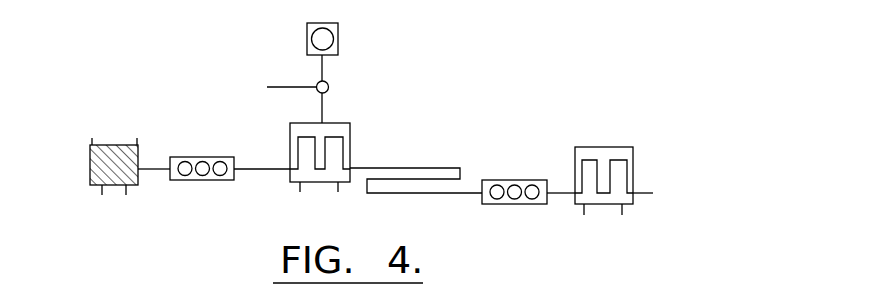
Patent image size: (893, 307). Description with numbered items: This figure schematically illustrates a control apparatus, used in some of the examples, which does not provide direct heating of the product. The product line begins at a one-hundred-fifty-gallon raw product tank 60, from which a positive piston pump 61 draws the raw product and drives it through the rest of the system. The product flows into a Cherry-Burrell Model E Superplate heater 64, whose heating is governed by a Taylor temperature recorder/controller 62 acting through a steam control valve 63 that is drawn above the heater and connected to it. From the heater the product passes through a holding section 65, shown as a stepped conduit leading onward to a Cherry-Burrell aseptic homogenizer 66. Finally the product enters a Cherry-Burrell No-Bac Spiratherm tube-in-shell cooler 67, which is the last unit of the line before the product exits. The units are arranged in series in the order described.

The raw product tank 60 is at (143, 119).
The positive piston pump 61 is at (206, 134).
The temperature recorder/controller 62 is at (288, 30).
The steam control valve 63 is at (351, 68).
The Superplate heater 64 is at (346, 134).
The holding section 65 is at (416, 144).
The aseptic homogenizer 66 is at (509, 166).
The tube-in-shell cooler 67 is at (594, 142).